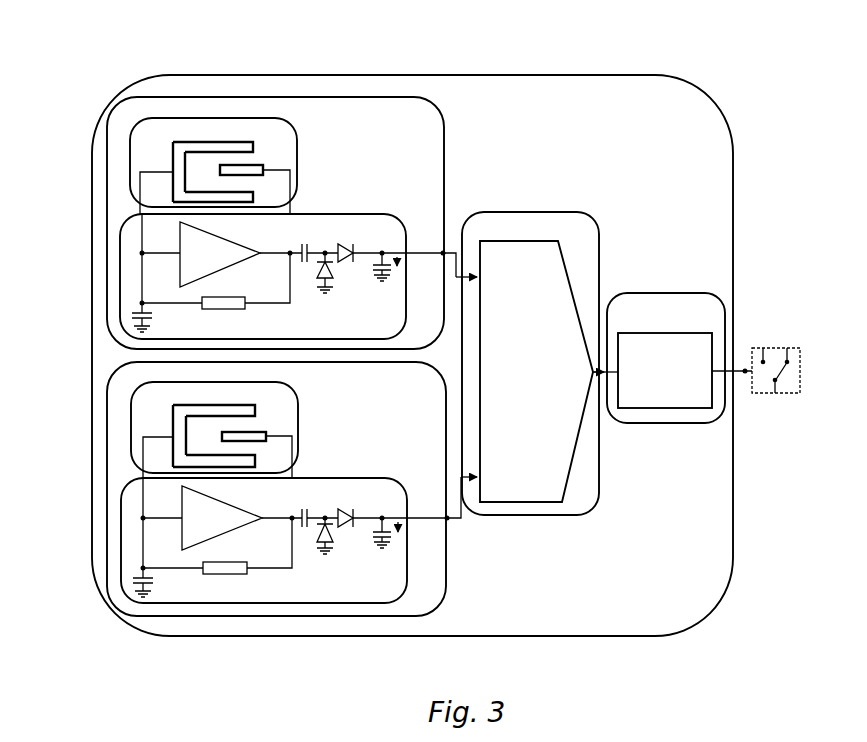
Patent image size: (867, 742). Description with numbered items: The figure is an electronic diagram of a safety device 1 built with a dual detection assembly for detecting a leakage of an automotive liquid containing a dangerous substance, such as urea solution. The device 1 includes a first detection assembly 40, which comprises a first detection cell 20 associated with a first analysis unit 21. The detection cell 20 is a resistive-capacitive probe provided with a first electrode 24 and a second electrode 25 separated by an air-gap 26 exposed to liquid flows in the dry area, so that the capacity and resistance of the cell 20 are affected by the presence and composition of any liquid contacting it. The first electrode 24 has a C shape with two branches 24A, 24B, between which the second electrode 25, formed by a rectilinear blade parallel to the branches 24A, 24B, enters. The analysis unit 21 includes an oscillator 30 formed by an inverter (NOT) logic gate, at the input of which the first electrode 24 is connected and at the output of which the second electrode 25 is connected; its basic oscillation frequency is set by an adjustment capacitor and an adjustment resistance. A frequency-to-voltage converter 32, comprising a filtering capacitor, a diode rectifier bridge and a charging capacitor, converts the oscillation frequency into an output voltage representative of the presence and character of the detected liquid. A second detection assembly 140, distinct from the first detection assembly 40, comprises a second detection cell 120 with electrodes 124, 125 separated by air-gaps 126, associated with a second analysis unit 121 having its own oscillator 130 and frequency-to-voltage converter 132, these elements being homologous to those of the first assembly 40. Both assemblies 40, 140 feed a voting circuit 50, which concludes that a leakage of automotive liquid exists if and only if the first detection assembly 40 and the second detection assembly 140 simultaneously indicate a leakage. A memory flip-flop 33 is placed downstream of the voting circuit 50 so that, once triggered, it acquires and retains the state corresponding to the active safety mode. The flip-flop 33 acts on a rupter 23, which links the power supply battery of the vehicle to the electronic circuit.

The safety device 1 is at (681, 43).
The first detection assembly 40 is at (452, 147).
The detection cell 20 is at (130, 148).
The first electrode 24 is at (173, 158).
The branch of first electrode 24A is at (212, 141).
The branch of first electrode 24B is at (292, 204).
The second electrode 25 is at (265, 172).
The air-gap 26 is at (249, 157).
The analysis unit 21 is at (120, 245).
The oscillator 30 is at (216, 246).
The frequency-to-voltage converter 32 is at (338, 289).
The voting circuit 50 is at (520, 240).
The memory flip-flop 33 is at (678, 376).
The rupter 23 is at (791, 395).
The second detection assembly 140 is at (276, 496).
The second detection cell 120 is at (192, 430).
The second assembly first electrode 124 is at (203, 432).
The second assembly second electrode 125 is at (293, 428).
The second assembly air-gaps 126 is at (268, 426).
The second analysis unit 121 is at (310, 554).
The second assembly oscillator 130 is at (231, 518).
The second assembly frequency-to-voltage converter 132 is at (343, 557).